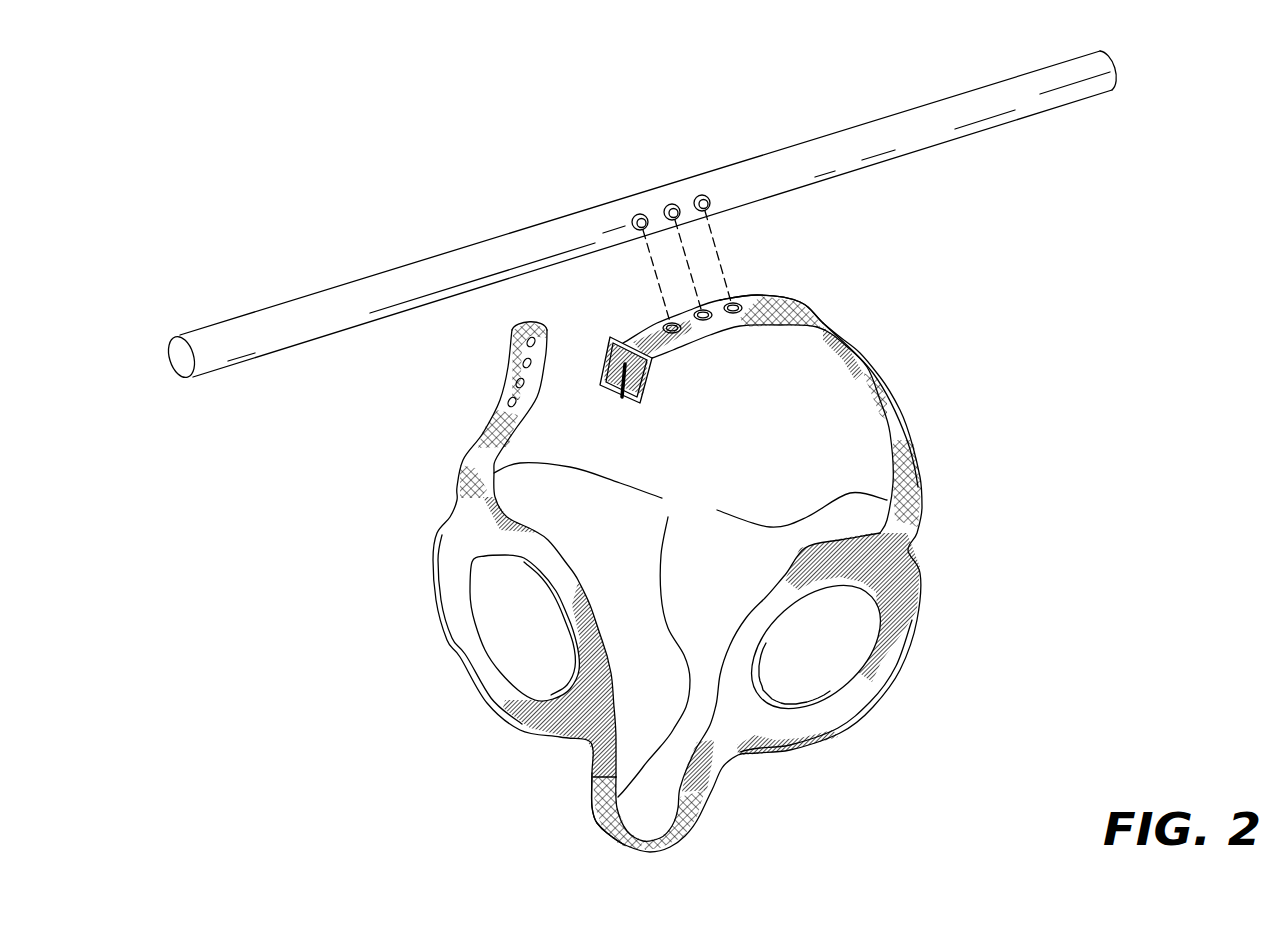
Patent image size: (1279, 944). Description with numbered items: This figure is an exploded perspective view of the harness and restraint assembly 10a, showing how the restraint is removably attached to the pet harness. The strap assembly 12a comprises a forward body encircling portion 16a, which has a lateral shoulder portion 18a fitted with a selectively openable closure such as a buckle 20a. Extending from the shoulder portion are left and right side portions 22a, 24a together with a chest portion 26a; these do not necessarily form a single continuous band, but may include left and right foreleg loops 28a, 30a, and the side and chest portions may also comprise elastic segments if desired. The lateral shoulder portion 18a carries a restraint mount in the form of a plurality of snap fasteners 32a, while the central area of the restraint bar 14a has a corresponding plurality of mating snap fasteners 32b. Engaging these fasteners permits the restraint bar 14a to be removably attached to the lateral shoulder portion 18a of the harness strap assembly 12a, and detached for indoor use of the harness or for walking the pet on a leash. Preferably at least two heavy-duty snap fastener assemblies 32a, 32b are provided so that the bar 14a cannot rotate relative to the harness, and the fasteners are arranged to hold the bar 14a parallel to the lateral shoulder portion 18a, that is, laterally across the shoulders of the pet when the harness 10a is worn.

The harness and restraint assembly 10a is at (256, 684).
The strap assembly 12a is at (392, 694).
The restraint bar 14a is at (452, 252).
The forward body encircling portion 16a is at (677, 573).
The lateral shoulder portion 18a is at (720, 340).
The buckle 20a is at (531, 365).
The left side portion 22a is at (457, 468).
The right side portion 24a is at (890, 455).
The chest portion 26a is at (591, 808).
The left foreleg loop 28a is at (433, 567).
The right foreleg loop 30a is at (752, 610).
The snap fasteners 32a is at (703, 312).
The mating snap fasteners 32b is at (672, 221).